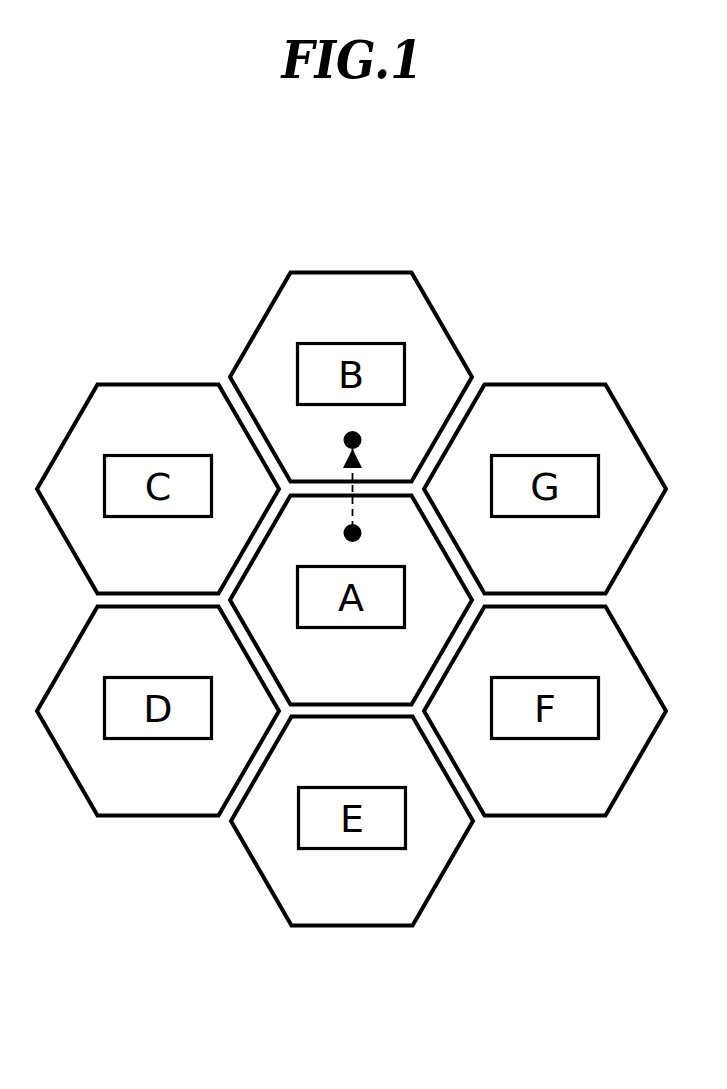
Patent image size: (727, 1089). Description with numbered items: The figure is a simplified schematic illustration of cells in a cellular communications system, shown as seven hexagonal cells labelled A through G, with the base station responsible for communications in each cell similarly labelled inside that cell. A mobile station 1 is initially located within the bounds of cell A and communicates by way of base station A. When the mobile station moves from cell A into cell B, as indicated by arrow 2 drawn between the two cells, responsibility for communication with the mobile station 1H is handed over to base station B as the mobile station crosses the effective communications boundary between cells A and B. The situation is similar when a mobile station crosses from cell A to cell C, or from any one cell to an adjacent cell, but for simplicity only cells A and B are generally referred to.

The mobile station 1 is at (362, 533).
The mobile station after handover 1H is at (343, 441).
The arrow 2 is at (362, 470).